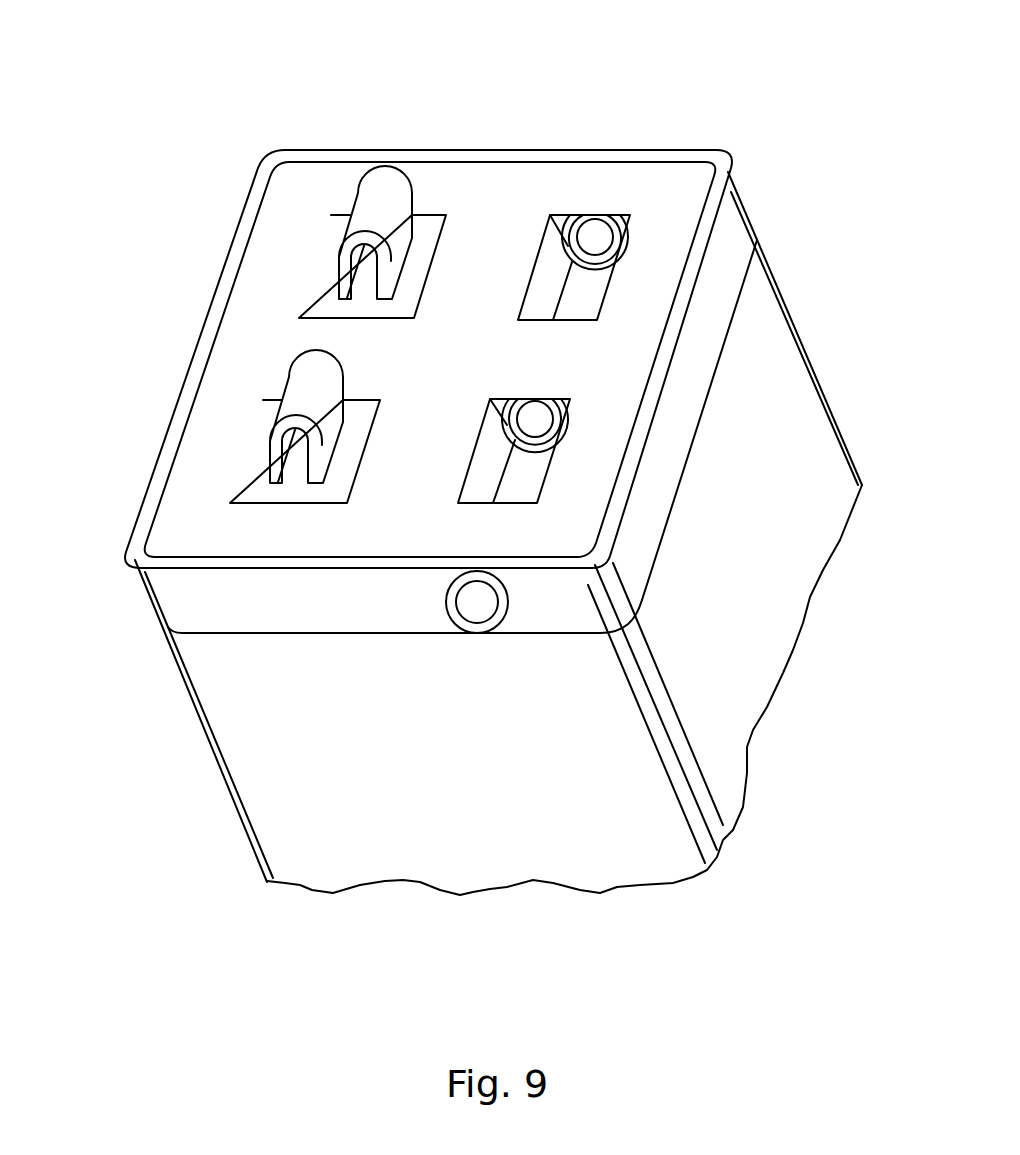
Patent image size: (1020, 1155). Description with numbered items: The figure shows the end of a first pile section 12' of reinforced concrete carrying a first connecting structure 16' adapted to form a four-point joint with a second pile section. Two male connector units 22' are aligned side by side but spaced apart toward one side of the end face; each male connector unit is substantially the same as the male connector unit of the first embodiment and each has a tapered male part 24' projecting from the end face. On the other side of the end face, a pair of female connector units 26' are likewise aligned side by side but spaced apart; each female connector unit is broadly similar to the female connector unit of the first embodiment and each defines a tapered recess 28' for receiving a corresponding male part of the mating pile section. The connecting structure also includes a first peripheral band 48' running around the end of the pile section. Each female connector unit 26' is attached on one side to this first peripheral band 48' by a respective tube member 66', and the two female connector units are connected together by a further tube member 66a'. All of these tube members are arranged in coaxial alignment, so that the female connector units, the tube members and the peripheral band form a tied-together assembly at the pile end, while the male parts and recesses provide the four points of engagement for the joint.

The first pile section 12' is at (471, 454).
The first connecting structure 16' is at (466, 517).
The male connector unit 22' is at (387, 262).
The tapered male part 24' is at (254, 258).
The female connector unit 26' is at (660, 341).
The tapered recess 28' is at (486, 346).
The first peripheral band 48' is at (502, 391).
The tube member 66' is at (511, 399).
The further tube member 66a' is at (552, 398).